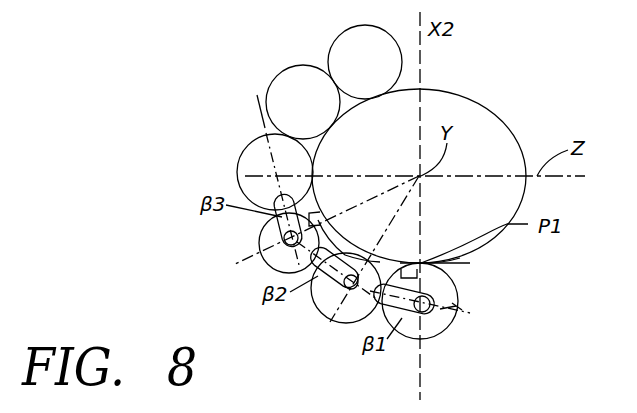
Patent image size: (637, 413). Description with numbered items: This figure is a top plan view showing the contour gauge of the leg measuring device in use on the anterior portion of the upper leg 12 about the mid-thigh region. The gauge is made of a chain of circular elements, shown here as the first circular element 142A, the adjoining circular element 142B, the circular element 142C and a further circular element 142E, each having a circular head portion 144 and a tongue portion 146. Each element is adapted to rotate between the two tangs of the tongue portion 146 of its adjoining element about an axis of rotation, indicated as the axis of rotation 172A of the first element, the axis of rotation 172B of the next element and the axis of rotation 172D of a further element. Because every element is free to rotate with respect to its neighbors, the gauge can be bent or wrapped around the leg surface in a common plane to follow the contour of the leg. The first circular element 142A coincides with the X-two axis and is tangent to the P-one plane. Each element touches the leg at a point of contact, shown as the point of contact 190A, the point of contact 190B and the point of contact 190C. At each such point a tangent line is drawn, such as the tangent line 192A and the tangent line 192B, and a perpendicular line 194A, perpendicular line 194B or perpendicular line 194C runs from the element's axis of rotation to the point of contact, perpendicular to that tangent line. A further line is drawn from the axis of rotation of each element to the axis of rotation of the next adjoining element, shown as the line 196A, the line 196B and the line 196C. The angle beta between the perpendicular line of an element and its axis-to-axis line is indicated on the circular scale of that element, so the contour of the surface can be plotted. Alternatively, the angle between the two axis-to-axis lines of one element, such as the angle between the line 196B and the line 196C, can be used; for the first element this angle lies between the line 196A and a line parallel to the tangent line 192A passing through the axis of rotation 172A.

The upper leg 12 is at (497, 116).
The circular element 142E is at (283, 75).
The axis of rotation 172D is at (275, 170).
The line between axes of rotation 196C is at (252, 117).
The circular element 142C is at (255, 240).
The perpendicular line 194C is at (258, 262).
The tangent line 192B is at (333, 224).
The point of contact 190C is at (330, 222).
The point of contact 190B is at (367, 258).
The point of contact 190A is at (421, 263).
The circular element 142B is at (318, 286).
The line between axes of rotation 196B is at (340, 280).
The perpendicular line 194B is at (330, 322).
The axis of rotation 172B is at (318, 302).
The perpendicular line 194A is at (419, 340).
The first circular element 142A is at (424, 338).
The axis of rotation 172A is at (408, 315).
The circular head portion 144 is at (460, 293).
The tongue portion 146 is at (436, 312).
The line between axes of rotation 196A is at (462, 308).
The tangent line 192A is at (459, 268).